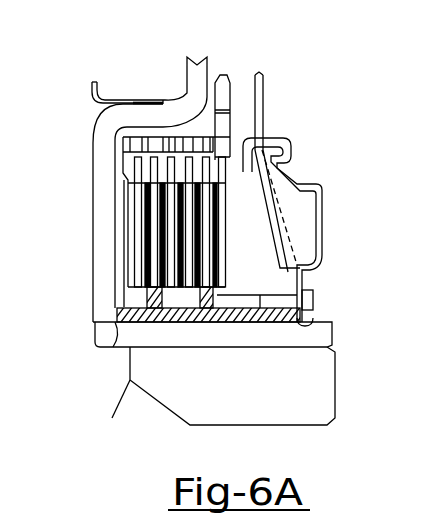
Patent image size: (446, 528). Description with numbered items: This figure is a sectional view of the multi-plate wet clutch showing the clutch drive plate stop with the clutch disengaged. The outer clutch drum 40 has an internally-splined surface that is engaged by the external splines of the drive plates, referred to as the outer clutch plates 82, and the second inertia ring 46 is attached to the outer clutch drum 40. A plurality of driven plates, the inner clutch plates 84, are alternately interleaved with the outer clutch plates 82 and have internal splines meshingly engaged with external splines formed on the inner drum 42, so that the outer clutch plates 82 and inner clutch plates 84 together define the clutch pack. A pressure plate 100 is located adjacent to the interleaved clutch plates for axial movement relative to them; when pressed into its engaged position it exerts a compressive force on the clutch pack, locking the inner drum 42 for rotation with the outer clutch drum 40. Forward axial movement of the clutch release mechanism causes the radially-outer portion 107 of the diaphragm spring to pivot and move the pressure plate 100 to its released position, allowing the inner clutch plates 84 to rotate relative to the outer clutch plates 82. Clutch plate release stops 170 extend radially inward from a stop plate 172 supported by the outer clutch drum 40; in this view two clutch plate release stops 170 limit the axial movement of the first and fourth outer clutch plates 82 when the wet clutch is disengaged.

The outer clutch drum 40 is at (130, 340).
The inner drum 42 is at (227, 138).
The second inertia ring 46 is at (308, 399).
The outer clutch plates 82 is at (143, 270).
The inner clutch plates 84 is at (140, 145).
The pressure plate 100 is at (233, 210).
The radially-outer portion of diaphragm spring 107 is at (263, 110).
The clutch plate release stops 170 is at (212, 293).
The stop plate 172 is at (310, 318).